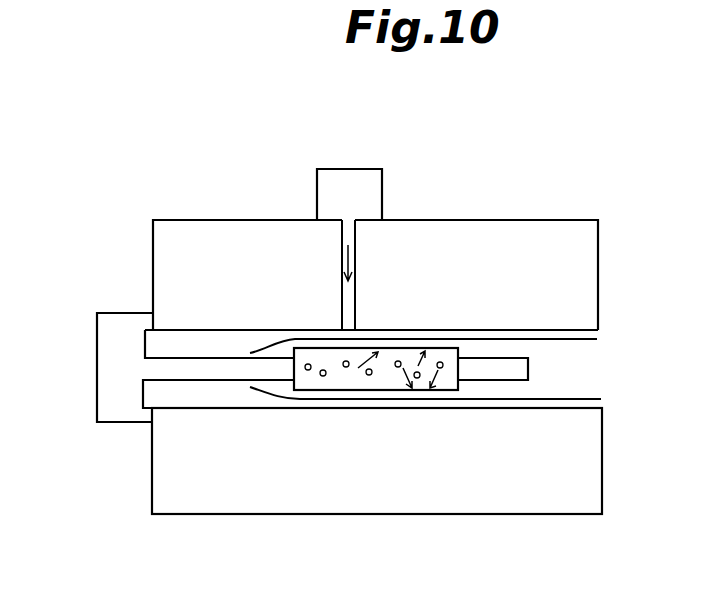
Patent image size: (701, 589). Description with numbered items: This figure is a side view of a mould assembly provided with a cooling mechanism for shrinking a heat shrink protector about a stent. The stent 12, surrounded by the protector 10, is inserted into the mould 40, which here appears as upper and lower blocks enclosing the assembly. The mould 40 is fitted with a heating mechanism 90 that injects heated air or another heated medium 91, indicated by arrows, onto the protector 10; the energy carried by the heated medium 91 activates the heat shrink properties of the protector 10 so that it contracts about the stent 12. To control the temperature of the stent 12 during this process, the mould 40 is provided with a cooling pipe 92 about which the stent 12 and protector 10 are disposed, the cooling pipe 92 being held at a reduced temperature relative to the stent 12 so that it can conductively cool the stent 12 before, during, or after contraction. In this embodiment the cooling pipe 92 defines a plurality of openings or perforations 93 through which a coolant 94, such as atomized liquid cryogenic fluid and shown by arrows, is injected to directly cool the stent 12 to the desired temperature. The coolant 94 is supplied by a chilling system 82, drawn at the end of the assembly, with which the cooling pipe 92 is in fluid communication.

The protector 10 is at (558, 330).
The stent 12 is at (448, 348).
The mould 40 is at (172, 220).
The chilling system 82 is at (108, 350).
The heating mechanism 90 is at (360, 170).
The heated medium 91 is at (352, 256).
The cooling pipe 92 is at (220, 372).
The perforations 93 is at (370, 375).
The coolant 94 is at (441, 368).